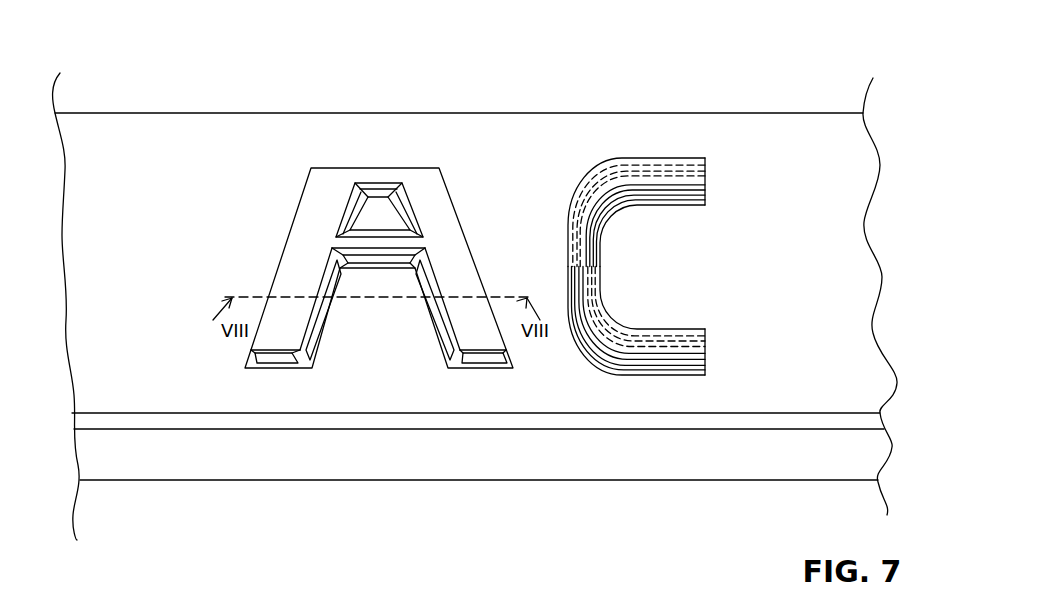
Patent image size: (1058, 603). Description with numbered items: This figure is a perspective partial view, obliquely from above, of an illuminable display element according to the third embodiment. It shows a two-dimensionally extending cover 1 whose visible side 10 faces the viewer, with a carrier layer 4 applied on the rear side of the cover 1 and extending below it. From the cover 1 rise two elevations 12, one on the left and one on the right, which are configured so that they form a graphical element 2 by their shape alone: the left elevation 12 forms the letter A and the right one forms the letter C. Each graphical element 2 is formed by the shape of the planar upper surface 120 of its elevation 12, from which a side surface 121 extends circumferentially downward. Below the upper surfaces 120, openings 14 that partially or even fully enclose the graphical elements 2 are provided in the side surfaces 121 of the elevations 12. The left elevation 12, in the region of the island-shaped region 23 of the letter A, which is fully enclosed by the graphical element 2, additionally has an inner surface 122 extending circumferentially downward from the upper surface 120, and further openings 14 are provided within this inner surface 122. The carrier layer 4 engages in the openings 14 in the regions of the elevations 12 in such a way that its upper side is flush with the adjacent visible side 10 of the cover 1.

The cover 1 is at (647, 422).
The graphical element 2 is at (286, 313).
The carrier layer 4 is at (558, 463).
The visible side 10 is at (155, 372).
The elevation 12 is at (438, 155).
The opening 14 is at (349, 228).
The island-shaped region 23 is at (388, 222).
The upper surface 120 is at (443, 227).
The side surface 121 is at (447, 362).
The inner surface 122 is at (386, 197).